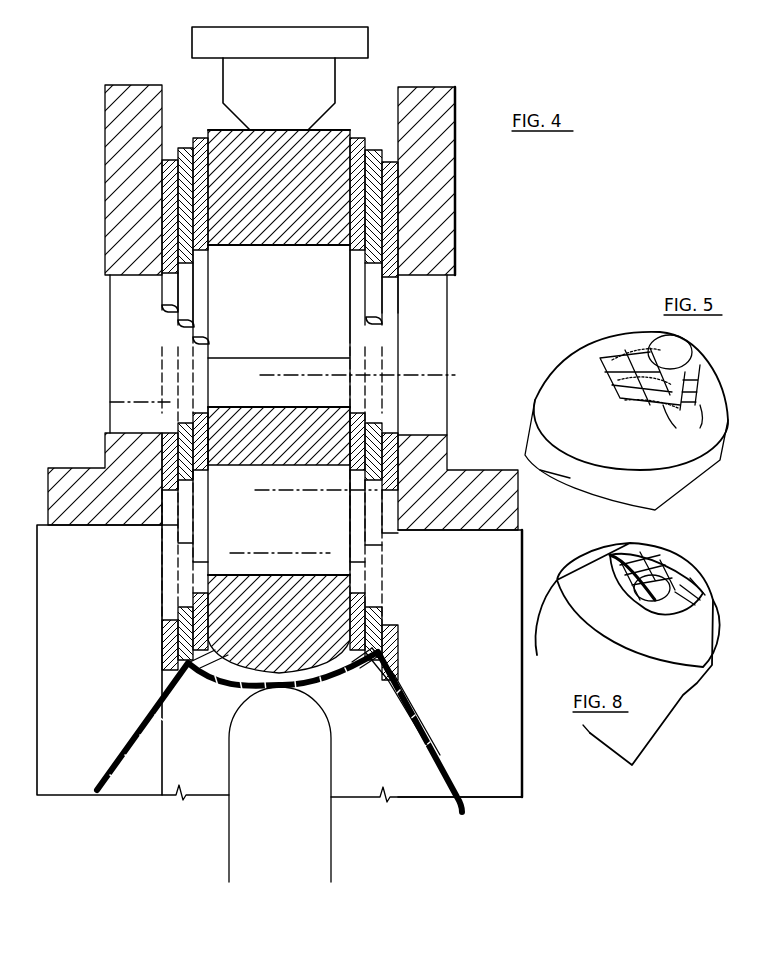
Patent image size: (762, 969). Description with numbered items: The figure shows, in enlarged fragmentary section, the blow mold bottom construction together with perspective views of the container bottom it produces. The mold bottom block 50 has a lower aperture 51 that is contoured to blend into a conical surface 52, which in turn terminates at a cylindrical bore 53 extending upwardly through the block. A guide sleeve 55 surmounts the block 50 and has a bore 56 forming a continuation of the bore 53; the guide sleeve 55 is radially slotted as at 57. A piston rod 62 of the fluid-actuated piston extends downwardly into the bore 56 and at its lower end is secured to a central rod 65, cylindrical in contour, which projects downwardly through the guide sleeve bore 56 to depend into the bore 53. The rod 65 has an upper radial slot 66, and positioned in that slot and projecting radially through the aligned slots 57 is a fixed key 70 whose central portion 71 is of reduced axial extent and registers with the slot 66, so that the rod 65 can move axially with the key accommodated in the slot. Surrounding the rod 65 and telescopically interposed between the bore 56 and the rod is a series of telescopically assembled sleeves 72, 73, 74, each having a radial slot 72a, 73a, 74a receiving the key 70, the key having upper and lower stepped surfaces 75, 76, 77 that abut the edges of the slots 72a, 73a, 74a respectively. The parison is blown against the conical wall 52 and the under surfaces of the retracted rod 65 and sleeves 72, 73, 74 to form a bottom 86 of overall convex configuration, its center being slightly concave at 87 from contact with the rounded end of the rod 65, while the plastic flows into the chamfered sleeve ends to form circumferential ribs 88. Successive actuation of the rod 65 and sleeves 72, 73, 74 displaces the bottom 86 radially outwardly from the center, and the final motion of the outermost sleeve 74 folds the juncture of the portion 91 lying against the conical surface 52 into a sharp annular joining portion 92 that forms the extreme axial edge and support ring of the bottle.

In FIG. 4, the mold bottom block 50 is at (502, 565).
In FIG. 4, the lower aperture 51 is at (356, 784).
In FIG. 4, the conical surface 52 is at (427, 732).
In FIG. 4, the cylindrical bore 53 is at (165, 593).
In FIG. 4, the guide sleeve 55 is at (462, 466).
In FIG. 4, the bore 56 is at (388, 483).
In FIG. 4, the radial slots 57 is at (432, 281).
In FIG. 4, the piston rod 62 is at (355, 42).
In FIG. 4, the central rod 65 is at (325, 593).
In FIG. 4, the upper radial slot 66 is at (243, 247).
In FIG. 4, the fixed key 70 is at (130, 411).
In FIG. 4, the central portion of the key 71 is at (225, 381).
In FIG. 4, the sleeve 72 is at (358, 181).
In FIG. 4, the sleeve 73 is at (373, 202).
In FIG. 4, the sleeve 74 is at (390, 223).
In FIG. 4, the radial slot 72a is at (355, 408).
In FIG. 4, the radial slot 73a is at (373, 420).
In FIG. 4, the radial slot 74a is at (385, 440).
In FIG. 4, the stepped surface 75 is at (196, 340).
In FIG. 4, the stepped surface 76 is at (180, 322).
In FIG. 4, the stepped surface 77 is at (165, 306).
In FIG. 4, the bottom 86 is at (397, 682).
In FIG. 5, the bottom 86 is at (655, 398).
In FIG. 4, the concave center 87 is at (233, 672).
In FIG. 8, the concave center 87 is at (645, 598).
In FIG. 4, the circumferential ribs 88 is at (374, 668).
In FIG. 5, the circumferential ribs 88 is at (676, 428).
In FIG. 8, the circumferential ribs 88 is at (698, 596).
In FIG. 8, the portion of the bottom 91 is at (695, 645).
In FIG. 8, the annular joining portion 92 is at (668, 556).